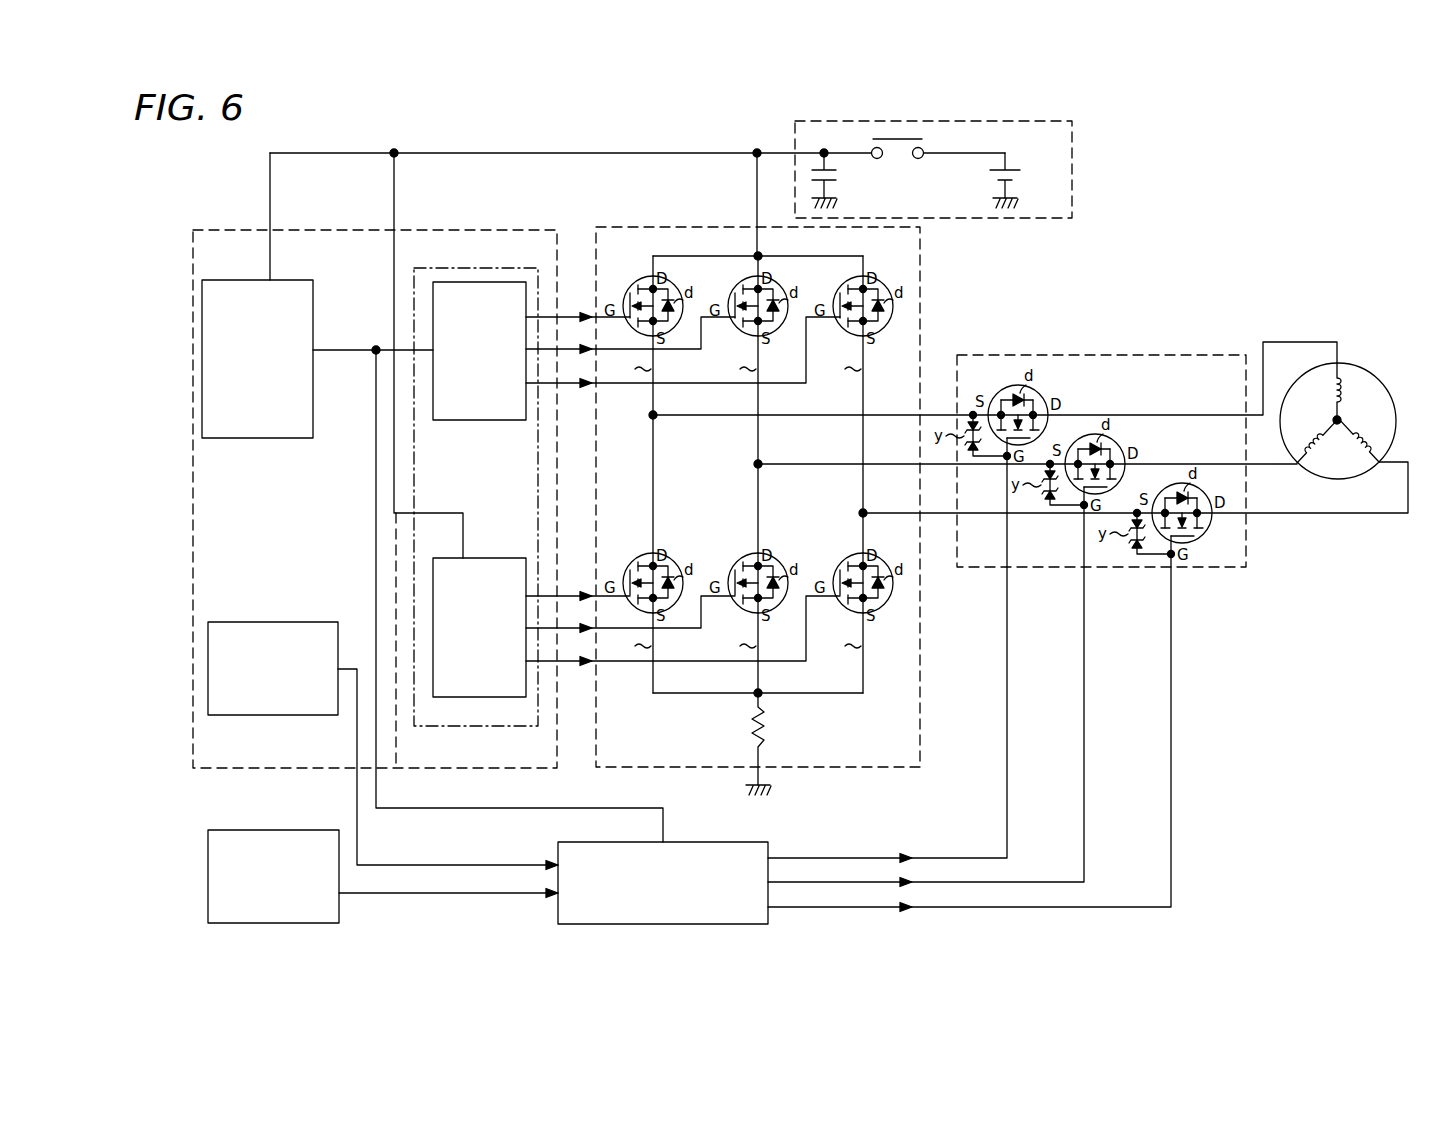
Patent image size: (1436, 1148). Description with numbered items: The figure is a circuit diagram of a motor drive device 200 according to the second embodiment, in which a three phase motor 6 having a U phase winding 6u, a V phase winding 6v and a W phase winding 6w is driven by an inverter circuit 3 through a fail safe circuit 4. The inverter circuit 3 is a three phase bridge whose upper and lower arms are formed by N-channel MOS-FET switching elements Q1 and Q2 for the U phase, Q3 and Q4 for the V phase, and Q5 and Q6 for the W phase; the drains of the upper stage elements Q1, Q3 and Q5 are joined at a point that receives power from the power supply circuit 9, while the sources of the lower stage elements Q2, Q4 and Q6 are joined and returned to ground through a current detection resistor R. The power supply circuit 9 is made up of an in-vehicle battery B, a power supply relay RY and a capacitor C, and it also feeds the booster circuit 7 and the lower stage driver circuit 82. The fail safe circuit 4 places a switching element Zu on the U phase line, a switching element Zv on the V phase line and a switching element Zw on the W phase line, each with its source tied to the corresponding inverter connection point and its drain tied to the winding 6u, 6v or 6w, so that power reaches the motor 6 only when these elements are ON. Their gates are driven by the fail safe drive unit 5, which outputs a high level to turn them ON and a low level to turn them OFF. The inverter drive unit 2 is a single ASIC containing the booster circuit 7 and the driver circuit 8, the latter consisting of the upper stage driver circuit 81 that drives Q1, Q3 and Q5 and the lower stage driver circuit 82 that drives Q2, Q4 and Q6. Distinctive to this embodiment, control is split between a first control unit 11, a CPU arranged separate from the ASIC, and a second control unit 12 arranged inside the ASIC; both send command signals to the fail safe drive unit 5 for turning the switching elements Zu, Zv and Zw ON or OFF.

The motor drive device 200 is at (1169, 267).
The inverter drive unit 2 is at (339, 230).
The booster circuit 7 is at (296, 280).
The driver circuit 8 is at (482, 728).
The upper stage driver circuit 81 is at (468, 420).
The lower stage driver circuit 82 is at (478, 558).
The second control unit 12 is at (280, 622).
The first control unit 11 is at (278, 830).
The inverter circuit 3 is at (921, 270).
The power supply circuit 9 is at (1073, 142).
The fail safe circuit 4 is at (1179, 355).
The fail safe drive unit 5 is at (706, 842).
The motor 6 is at (1378, 372).
The U phase winding 6u is at (1348, 393).
The V phase winding 6v is at (1311, 430).
The W phase winding 6w is at (1365, 448).
The switching element Q1 is at (637, 284).
The switching element Q2 is at (637, 561).
The switching element Q3 is at (740, 284).
The switching element Q4 is at (740, 561).
The switching element Q5 is at (843, 284).
The switching element Q6 is at (843, 561).
The switching element Zu is at (1047, 398).
The switching element Zv is at (1124, 447).
The switching element Zw is at (1211, 496).
The current detection resistor R is at (771, 733).
The capacitor C is at (837, 178).
The power supply relay RY is at (897, 152).
The in-vehicle battery B is at (1020, 178).